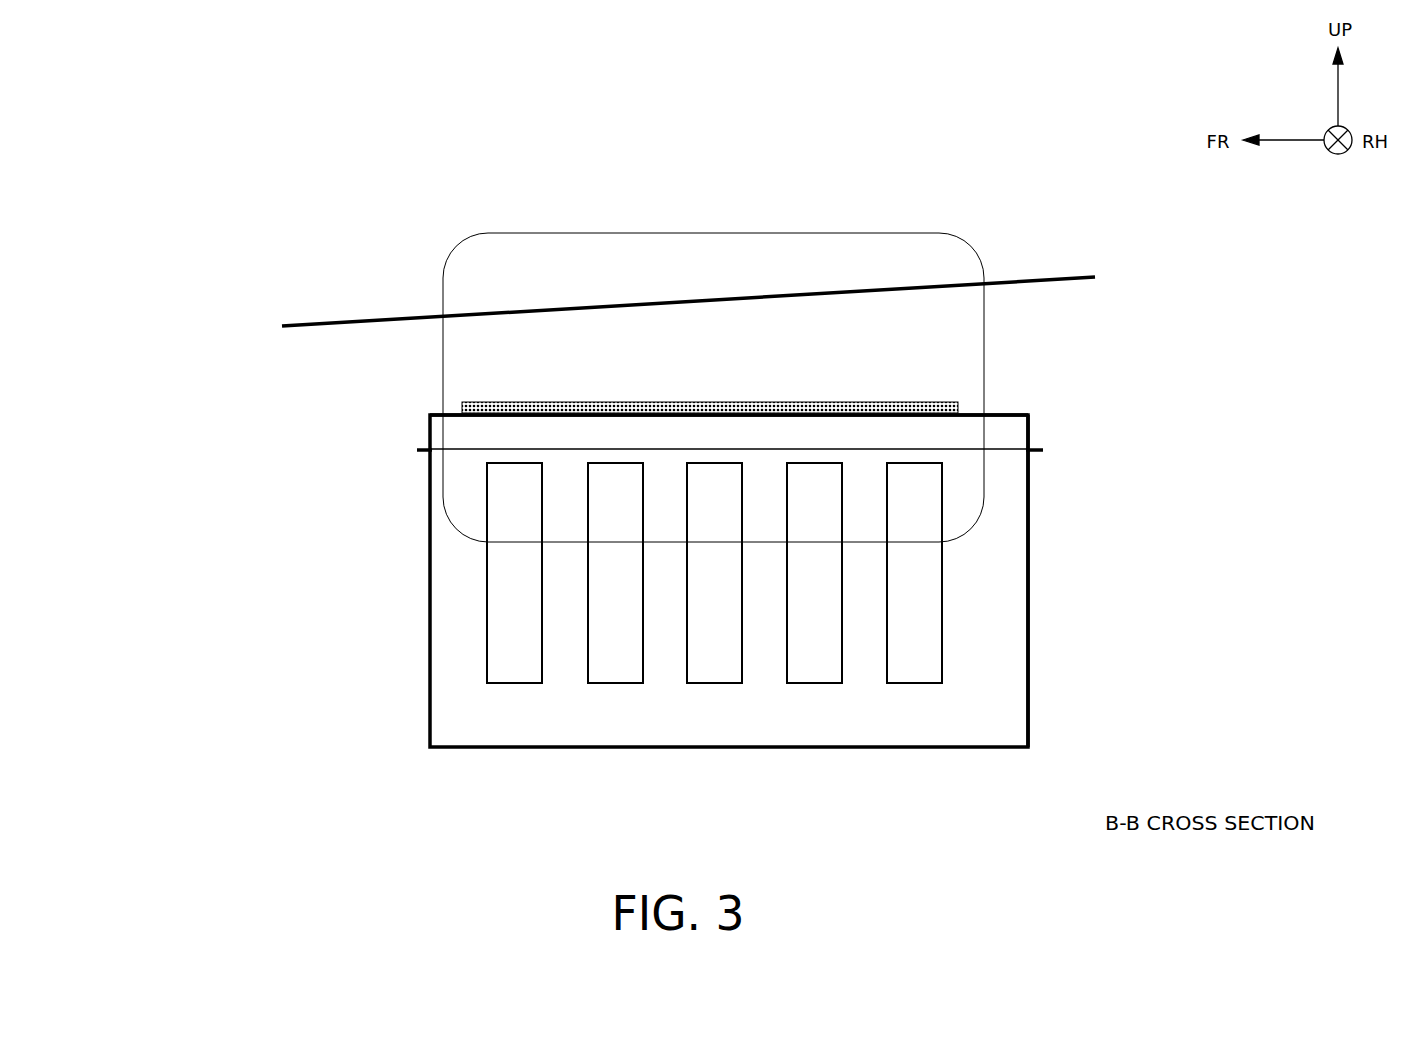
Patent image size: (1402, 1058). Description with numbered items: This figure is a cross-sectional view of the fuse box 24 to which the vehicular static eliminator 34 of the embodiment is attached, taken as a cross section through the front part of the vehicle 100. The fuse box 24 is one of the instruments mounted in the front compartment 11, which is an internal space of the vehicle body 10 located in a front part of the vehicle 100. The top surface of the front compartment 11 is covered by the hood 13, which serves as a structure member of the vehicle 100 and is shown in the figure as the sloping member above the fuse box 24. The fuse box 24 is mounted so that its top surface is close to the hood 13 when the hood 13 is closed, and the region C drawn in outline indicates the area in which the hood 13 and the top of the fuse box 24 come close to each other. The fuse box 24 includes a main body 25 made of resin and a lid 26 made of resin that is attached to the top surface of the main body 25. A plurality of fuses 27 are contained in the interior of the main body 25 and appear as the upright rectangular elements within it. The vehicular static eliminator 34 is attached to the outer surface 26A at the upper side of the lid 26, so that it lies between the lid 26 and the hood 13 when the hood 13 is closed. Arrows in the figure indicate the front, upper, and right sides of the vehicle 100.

The vehicle 100 is at (158, 313).
The vehicle body 10 is at (396, 297).
The front compartment 11 is at (305, 484).
The hood 13 is at (1042, 277).
The cross member region C is at (853, 233).
The fuse box 24 is at (1110, 557).
The main body 25 is at (1030, 620).
The lid 26 is at (1030, 428).
The outer surface 26A is at (1013, 415).
The fuses 27 is at (942, 635).
The vehicular static eliminator 34 is at (938, 402).